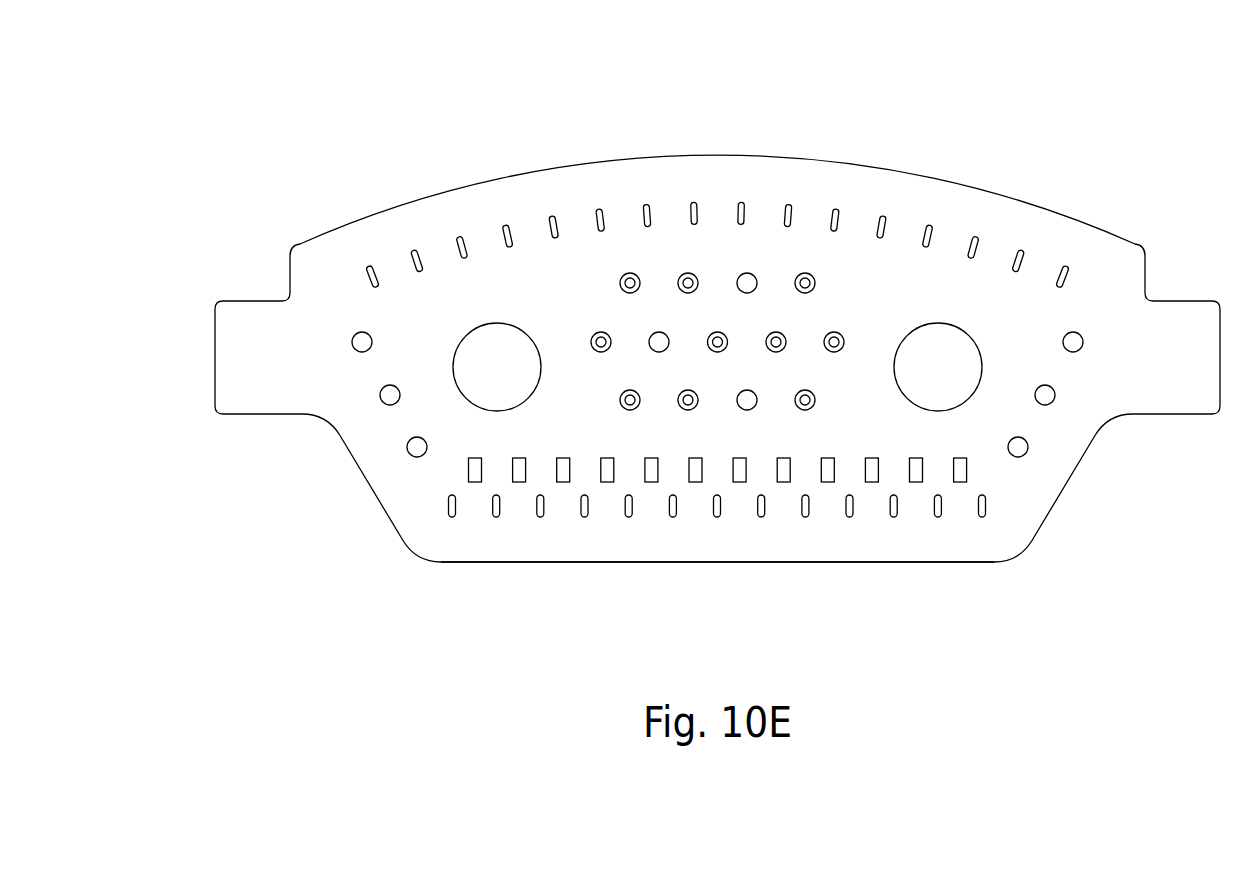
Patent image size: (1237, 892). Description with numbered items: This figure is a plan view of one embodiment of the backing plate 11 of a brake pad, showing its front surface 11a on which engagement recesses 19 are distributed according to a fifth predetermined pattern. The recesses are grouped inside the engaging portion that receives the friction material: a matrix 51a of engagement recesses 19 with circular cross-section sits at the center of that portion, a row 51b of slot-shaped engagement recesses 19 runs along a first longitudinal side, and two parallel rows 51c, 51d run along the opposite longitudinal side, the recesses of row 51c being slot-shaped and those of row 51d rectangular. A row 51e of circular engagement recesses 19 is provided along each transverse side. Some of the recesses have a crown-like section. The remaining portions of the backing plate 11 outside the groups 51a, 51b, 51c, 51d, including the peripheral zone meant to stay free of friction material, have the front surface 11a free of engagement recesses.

The backing plate 11 is at (372, 565).
The front surface 11a is at (712, 545).
The engagement recesses 19 is at (645, 205).
The matrix of engagement recesses 51a is at (856, 271).
The row of engagement recesses 51b is at (764, 196).
The row of engagement recesses 51c is at (868, 530).
The row of engagement recesses 51d is at (988, 470).
The row of engagement recesses 51e is at (385, 432).